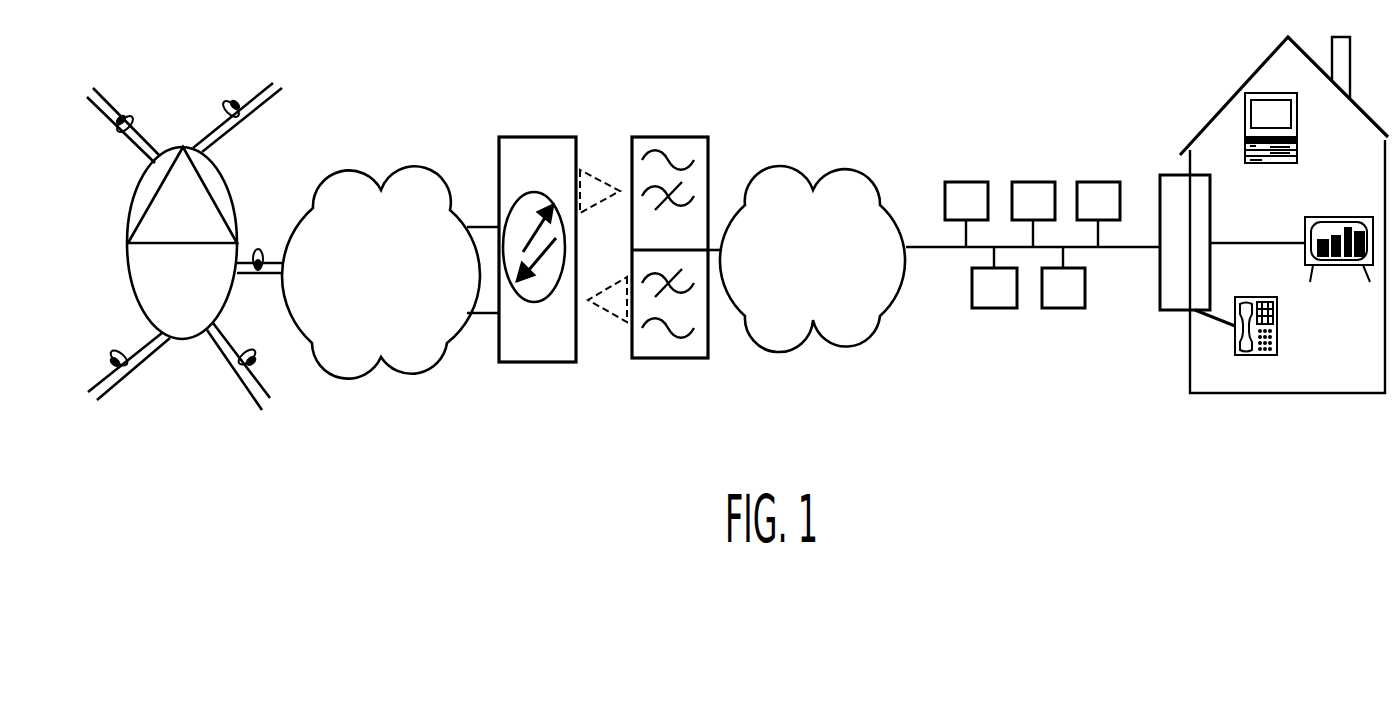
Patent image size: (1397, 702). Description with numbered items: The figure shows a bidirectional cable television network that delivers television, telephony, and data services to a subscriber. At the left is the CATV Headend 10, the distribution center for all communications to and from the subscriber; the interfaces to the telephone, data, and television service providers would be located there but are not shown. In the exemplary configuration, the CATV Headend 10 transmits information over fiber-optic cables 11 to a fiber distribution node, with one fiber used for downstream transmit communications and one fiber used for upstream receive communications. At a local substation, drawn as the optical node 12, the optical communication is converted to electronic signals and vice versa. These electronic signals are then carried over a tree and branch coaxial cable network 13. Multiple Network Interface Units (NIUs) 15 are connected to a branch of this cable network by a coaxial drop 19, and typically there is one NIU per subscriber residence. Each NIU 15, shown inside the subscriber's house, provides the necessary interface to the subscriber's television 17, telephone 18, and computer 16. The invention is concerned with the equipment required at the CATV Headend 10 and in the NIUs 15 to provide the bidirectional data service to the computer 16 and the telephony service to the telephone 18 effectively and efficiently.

The CATV Headend 10 is at (162, 425).
The fiber-optic cables 11 is at (358, 390).
The optical node 12 is at (606, 136).
The coaxial cable network 13 is at (790, 348).
The Network Interface Unit 15 is at (962, 182).
The computer 16 is at (1297, 125).
The television 17 is at (1326, 216).
The telephone 18 is at (1277, 330).
The coaxial cable drop 19 is at (975, 250).